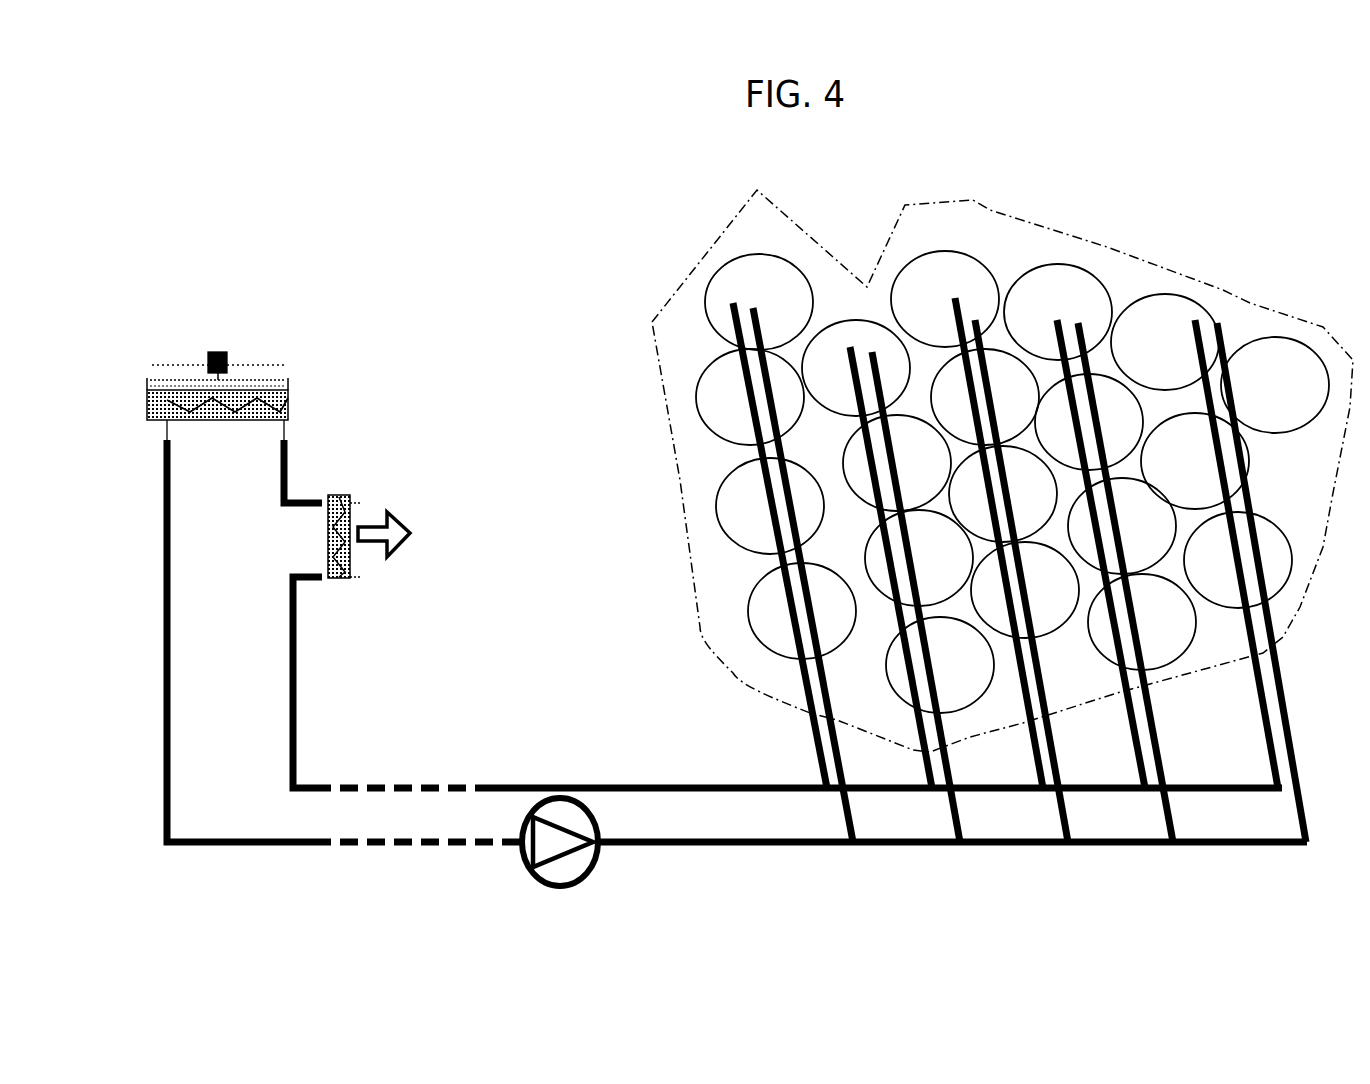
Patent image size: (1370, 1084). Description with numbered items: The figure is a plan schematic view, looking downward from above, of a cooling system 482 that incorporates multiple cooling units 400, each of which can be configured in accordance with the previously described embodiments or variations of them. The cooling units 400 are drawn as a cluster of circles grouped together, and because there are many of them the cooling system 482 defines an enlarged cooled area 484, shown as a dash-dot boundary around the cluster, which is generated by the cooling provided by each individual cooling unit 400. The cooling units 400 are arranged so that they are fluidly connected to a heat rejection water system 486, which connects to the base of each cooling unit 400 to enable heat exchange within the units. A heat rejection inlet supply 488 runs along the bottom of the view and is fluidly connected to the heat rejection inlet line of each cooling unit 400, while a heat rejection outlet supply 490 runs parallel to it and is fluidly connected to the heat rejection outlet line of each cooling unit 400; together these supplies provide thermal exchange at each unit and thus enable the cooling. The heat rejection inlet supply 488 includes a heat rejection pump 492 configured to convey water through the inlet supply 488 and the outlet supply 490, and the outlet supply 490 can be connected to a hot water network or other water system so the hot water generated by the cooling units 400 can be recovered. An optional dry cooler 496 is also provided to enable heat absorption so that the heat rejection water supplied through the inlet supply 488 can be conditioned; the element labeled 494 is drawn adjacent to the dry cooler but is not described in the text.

The cooling unit 400 is at (783, 300).
The cooling system 482 is at (1222, 123).
The enlarged cooled area 484 is at (1022, 223).
The heat rejection water system 486 is at (290, 246).
The heat rejection inlet supply 488 is at (760, 846).
The heat rejection outlet supply 490 is at (700, 787).
The heat rejection pump 492 is at (563, 888).
The heat exchanger 494 is at (347, 578).
The dry cooler 496 is at (290, 388).